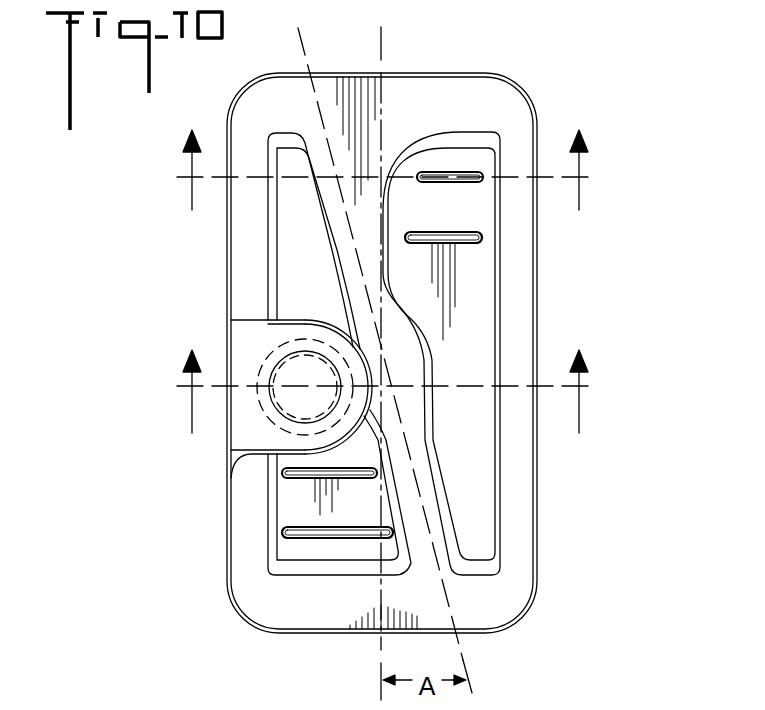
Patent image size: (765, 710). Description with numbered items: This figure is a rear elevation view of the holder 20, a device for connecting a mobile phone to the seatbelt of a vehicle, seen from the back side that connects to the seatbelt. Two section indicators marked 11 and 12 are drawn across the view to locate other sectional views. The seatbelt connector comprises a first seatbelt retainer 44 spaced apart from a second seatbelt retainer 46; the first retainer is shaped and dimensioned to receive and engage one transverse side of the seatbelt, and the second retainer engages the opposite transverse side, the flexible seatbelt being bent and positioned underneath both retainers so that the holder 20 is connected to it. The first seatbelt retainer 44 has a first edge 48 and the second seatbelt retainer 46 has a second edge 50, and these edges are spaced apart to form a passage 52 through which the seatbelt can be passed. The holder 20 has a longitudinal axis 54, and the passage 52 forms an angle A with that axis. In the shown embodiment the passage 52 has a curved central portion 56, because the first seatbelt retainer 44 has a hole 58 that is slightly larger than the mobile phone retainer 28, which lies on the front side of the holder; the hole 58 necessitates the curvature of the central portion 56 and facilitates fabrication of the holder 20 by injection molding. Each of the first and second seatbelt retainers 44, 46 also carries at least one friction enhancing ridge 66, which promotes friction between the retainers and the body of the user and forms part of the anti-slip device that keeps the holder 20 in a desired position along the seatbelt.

The holder 20 is at (545, 62).
The section line 11- 11 is at (384, 191).
The section line 12- 12 is at (384, 409).
The mobile phone retainer 28 is at (243, 363).
The first seatbelt retainer 44 is at (305, 242).
The second seatbelt retainer 46 is at (455, 310).
The first edge 48 is at (350, 299).
The second edge 50 is at (388, 294).
The passage 52 is at (356, 254).
The longitudinal axis 54 is at (383, 56).
The curved central portion 56 is at (402, 365).
The hole 58 is at (303, 375).
The friction enhancing ridge 66 is at (463, 238).